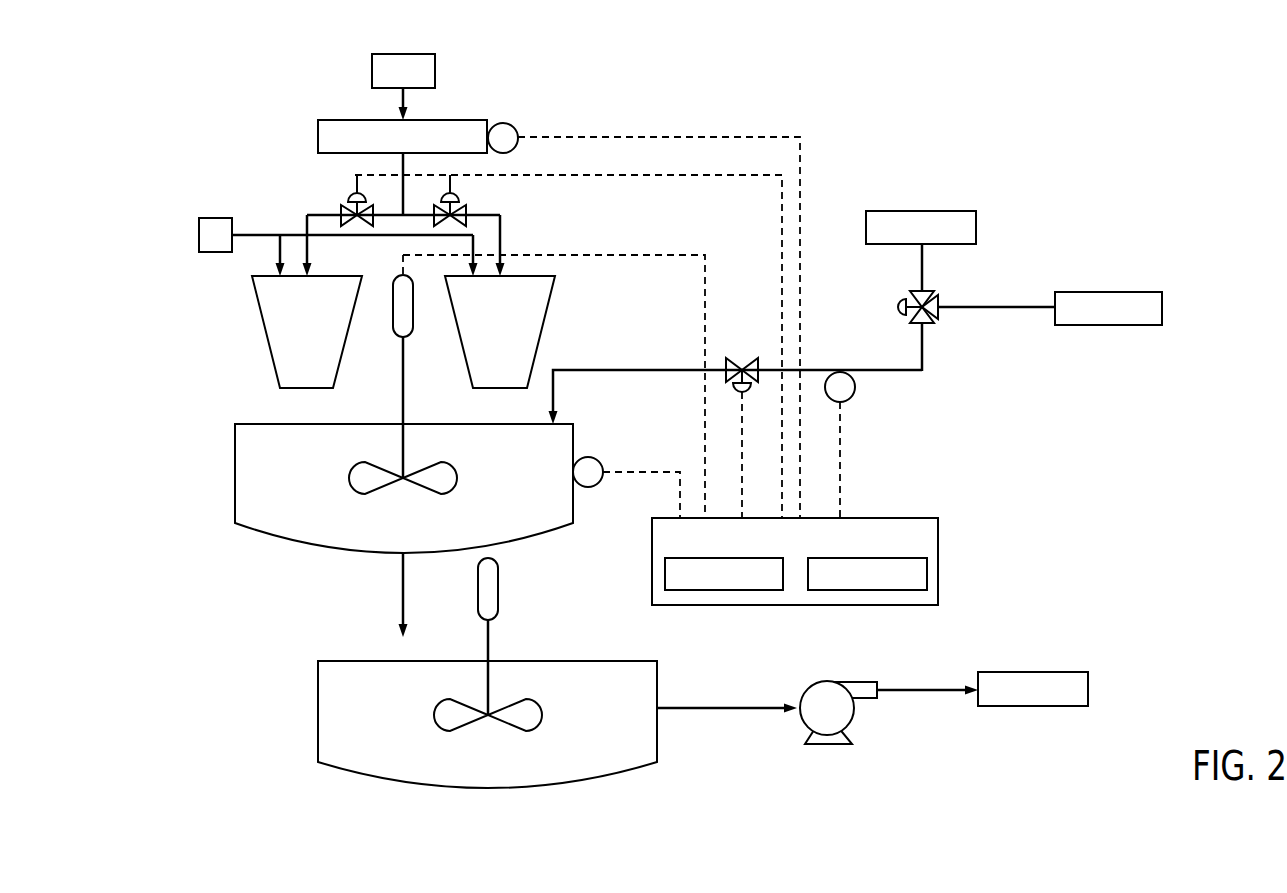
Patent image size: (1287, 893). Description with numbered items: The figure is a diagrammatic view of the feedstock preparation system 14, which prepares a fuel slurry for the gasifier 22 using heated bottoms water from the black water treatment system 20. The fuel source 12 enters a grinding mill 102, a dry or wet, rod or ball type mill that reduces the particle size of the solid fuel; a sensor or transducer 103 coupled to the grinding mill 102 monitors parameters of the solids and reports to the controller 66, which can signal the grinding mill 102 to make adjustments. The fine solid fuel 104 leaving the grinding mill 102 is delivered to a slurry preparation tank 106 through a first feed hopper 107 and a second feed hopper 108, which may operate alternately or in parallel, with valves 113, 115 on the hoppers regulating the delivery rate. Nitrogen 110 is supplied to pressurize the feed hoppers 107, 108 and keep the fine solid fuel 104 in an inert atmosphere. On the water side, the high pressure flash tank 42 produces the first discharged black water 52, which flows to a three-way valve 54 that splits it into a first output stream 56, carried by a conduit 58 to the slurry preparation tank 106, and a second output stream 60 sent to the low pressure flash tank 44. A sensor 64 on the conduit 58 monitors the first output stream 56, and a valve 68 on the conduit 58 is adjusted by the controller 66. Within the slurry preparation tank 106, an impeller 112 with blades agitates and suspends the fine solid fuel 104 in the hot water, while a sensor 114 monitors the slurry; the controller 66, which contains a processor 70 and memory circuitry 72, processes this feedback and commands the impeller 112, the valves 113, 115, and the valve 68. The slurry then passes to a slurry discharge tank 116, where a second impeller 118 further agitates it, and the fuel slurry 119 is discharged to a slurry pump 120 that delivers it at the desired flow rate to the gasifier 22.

The fuel source 12 is at (437, 73).
The feedstock preparation system 14 is at (205, 104).
The black water treatment system 20 is at (1098, 212).
The gasifier 22 is at (1088, 690).
The high pressure flash tank 42 is at (977, 225).
The low pressure flash tank 44 is at (1163, 306).
The first discharged black water 52 is at (921, 267).
The three-way valve 54 is at (898, 309).
The first output stream 56 is at (922, 348).
The conduit 58 is at (636, 369).
The second output stream 60 is at (998, 306).
The sensor 64 is at (853, 397).
The controller 66 is at (795, 557).
The valve 68 is at (742, 357).
The processor 70 is at (727, 605).
The memory circuitry 72 is at (870, 605).
The grinding mill 102 is at (362, 120).
The sensor or transducer 103 is at (511, 125).
The fine solid fuel 104 is at (400, 176).
The slurry preparation tank 106 is at (235, 485).
The first feed hopper 107 is at (265, 333).
The second feed hopper 108 is at (460, 327).
The nitrogen 110 is at (214, 218).
The impeller 112 is at (405, 440).
The valve 113 is at (349, 197).
The sensor 114 is at (598, 487).
The valve 115 is at (462, 197).
The slurry discharge tank 116 is at (318, 720).
The impeller 118 is at (490, 679).
The fuel slurry 119 is at (725, 708).
The slurry pump 120 is at (812, 685).